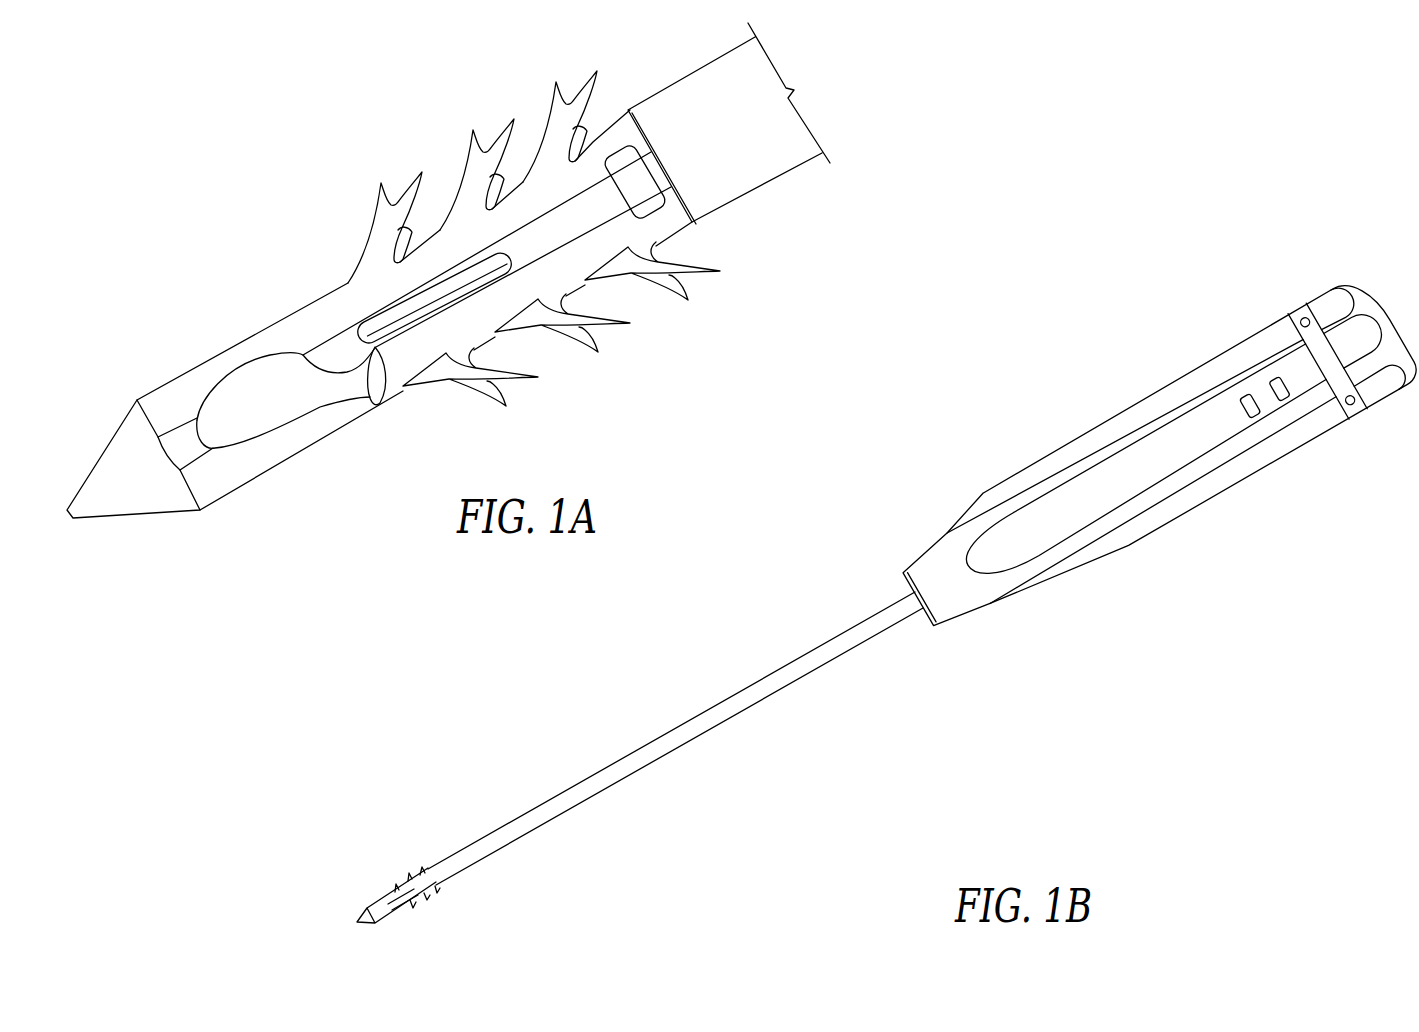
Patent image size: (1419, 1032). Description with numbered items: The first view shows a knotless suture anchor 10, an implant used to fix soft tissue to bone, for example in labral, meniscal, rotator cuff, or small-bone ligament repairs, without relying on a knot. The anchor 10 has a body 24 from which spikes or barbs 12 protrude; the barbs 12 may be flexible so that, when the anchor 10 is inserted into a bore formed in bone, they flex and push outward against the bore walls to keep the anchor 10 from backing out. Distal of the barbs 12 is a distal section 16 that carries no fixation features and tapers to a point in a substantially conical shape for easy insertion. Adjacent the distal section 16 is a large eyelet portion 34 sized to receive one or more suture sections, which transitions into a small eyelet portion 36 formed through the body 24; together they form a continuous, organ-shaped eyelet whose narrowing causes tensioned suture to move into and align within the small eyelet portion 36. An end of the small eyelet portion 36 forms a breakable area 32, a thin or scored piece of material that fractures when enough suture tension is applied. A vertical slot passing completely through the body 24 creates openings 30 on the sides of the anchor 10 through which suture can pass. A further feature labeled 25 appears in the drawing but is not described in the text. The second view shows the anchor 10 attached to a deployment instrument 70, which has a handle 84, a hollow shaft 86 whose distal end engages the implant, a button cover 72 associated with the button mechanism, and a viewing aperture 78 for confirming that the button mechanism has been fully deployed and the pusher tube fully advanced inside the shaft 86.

In FIG. 1A, the knotless suture anchor 10 is at (211, 214).
In FIG. 1B, the knotless suture anchor 10 is at (383, 874).
In FIG. 1A, the barbs 12 is at (467, 148).
In FIG. 1A, the distal section 16 is at (115, 465).
In FIG. 1A, the body 24 is at (270, 322).
In FIG. 1A, the coupling tab 25 is at (657, 220).
In FIG. 1A, the openings 30 is at (385, 330).
In FIG. 1A, the breakable area 32 is at (383, 403).
In FIG. 1A, the large eyelet portion 34 is at (275, 418).
In FIG. 1A, the small eyelet portion 36 is at (360, 388).
In FIG. 1B, the deployment instrument 70 is at (994, 746).
In FIG. 1B, the button cover 72 is at (1327, 300).
In FIG. 1B, the viewing aperture 78 is at (1263, 420).
In FIG. 1B, the handle 84 is at (1135, 405).
In FIG. 1B, the hollow shaft 86 is at (665, 730).